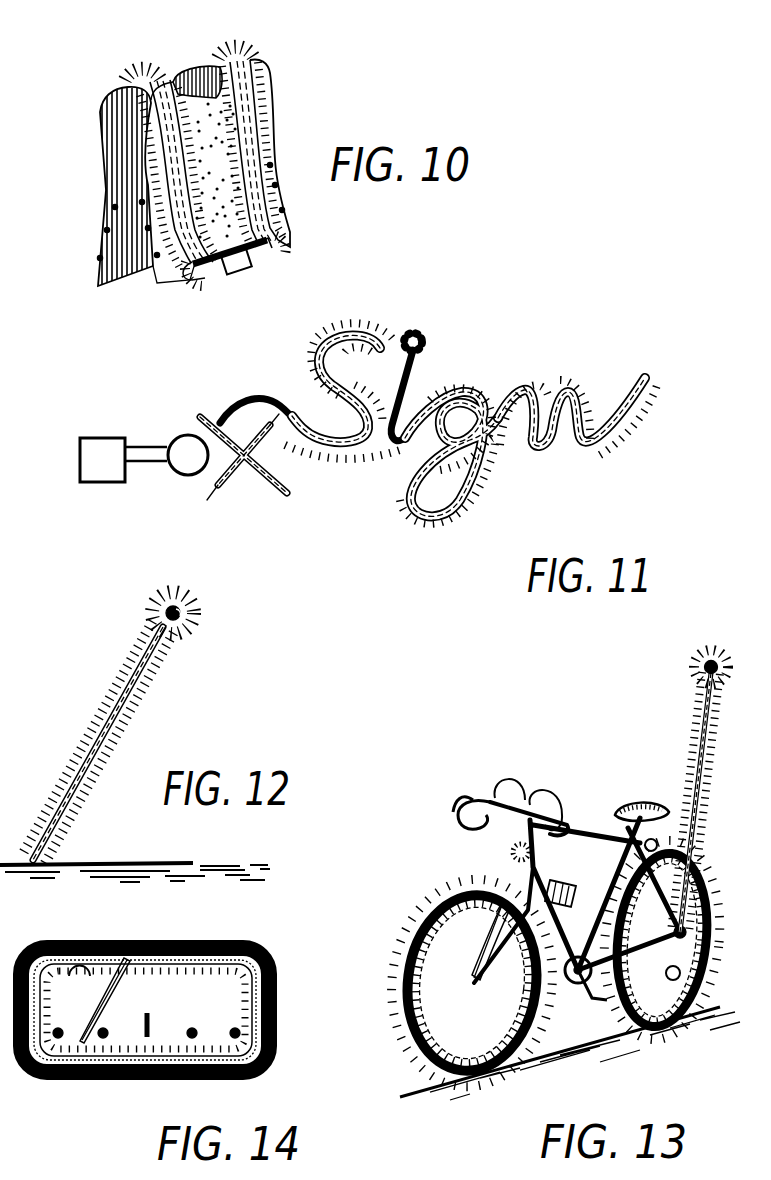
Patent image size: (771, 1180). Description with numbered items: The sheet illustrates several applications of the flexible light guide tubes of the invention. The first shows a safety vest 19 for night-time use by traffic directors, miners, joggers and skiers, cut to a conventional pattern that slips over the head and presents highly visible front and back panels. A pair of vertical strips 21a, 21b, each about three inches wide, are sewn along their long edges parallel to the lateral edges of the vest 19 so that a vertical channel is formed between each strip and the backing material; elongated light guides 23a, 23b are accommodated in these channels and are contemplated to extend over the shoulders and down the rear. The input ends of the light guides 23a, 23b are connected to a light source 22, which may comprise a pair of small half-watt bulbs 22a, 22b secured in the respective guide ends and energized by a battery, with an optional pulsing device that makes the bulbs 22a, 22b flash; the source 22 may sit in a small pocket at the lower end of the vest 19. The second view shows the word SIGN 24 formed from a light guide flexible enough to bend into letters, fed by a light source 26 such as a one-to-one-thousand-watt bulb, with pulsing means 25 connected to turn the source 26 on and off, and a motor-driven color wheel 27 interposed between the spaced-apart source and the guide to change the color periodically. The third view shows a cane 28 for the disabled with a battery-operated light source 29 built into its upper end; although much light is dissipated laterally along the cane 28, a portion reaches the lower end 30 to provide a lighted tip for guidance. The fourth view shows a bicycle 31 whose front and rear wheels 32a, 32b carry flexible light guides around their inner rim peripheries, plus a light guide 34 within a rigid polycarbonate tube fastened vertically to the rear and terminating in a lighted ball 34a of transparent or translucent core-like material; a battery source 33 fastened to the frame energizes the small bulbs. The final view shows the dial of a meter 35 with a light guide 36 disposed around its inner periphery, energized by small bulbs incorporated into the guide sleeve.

In FIG. 10, the vest 19 is at (97, 266).
In FIG. 10, the vertical strip 21a is at (160, 183).
In FIG. 10, the vertical strip 21b is at (263, 138).
In FIG. 10, the light source 22 is at (243, 274).
In FIG. 10, the bulb 22a is at (227, 277).
In FIG. 10, the bulb 22b is at (267, 247).
In FIG. 10, the elongated light guide 23a is at (170, 133).
In FIG. 10, the elongated light guide 23b is at (263, 87).
In FIG. 11, the illuminated sign lettering 24 is at (408, 380).
In FIG. 11, the pulsing means 25 is at (101, 482).
In FIG. 11, the light source 26 is at (188, 482).
In FIG. 11, the motor-driven color wheel 27 is at (277, 482).
In FIG. 12, the cane 28 is at (133, 703).
In FIG. 12, the light bulb 29 is at (167, 647).
In FIG. 12, the lower end 30 is at (43, 857).
In FIG. 13, the bicycle 31 is at (588, 797).
In FIG. 13, the front wheel 32a is at (462, 890).
In FIG. 13, the rear wheel 32b is at (690, 987).
In FIG. 13, the battery source 33 is at (567, 893).
In FIG. 13, the light guide 34 is at (700, 727).
In FIG. 13, the lighted ball 34a is at (712, 661).
In FIG. 14, the meter 35 is at (200, 940).
In FIG. 14, the light guide 36 is at (103, 940).